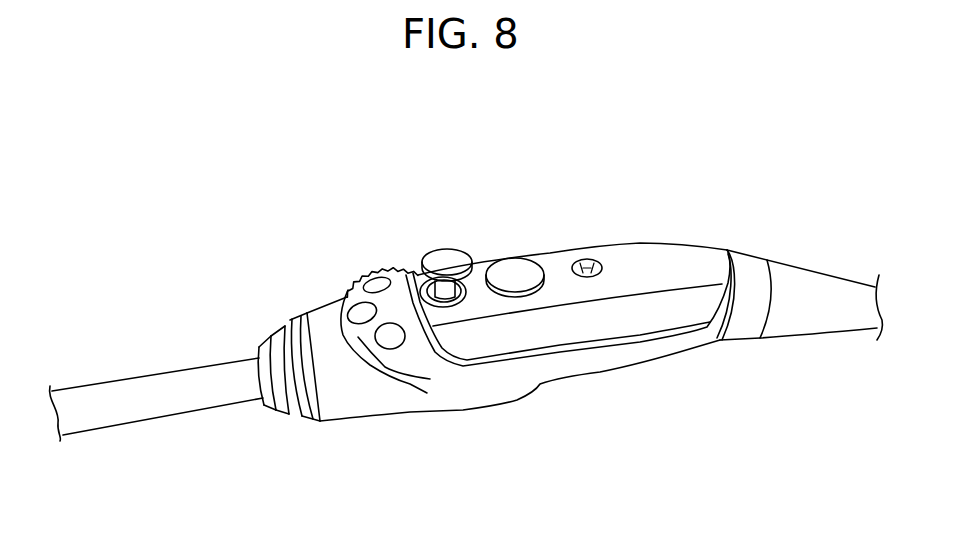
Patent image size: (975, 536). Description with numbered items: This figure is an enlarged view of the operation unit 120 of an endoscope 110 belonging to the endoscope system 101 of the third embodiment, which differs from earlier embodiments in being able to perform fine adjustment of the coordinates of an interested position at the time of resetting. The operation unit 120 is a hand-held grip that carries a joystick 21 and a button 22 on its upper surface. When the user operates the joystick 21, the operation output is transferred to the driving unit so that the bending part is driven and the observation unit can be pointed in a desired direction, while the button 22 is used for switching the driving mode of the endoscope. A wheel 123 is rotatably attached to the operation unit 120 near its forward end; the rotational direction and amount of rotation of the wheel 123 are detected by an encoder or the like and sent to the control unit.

The endoscope system 101 is at (200, 272).
The operation unit 120 is at (323, 256).
The endoscope 110 is at (561, 289).
The wheel 123 is at (373, 273).
The joystick 21 is at (447, 255).
The button 22 is at (508, 272).